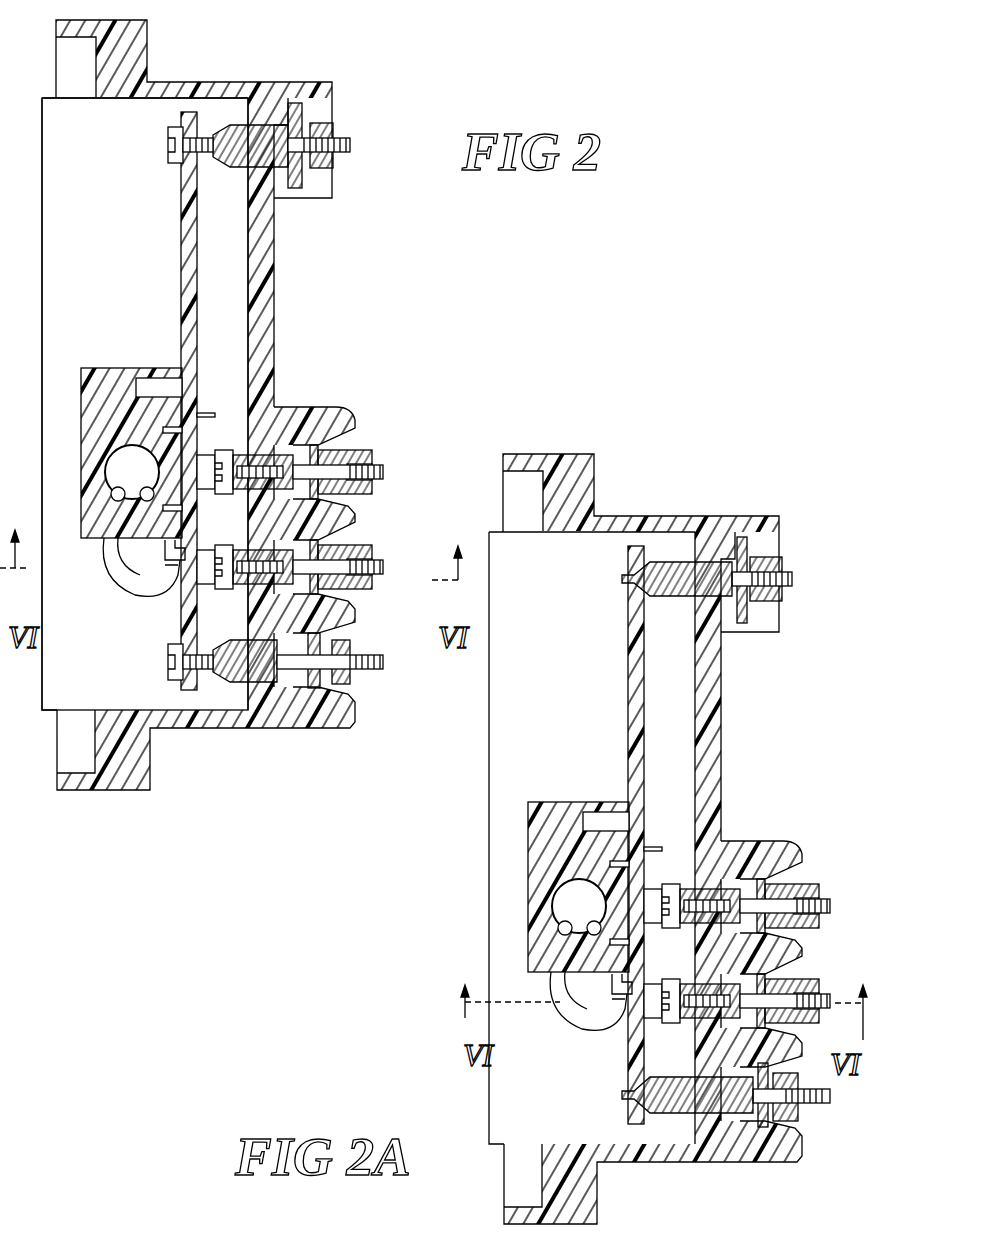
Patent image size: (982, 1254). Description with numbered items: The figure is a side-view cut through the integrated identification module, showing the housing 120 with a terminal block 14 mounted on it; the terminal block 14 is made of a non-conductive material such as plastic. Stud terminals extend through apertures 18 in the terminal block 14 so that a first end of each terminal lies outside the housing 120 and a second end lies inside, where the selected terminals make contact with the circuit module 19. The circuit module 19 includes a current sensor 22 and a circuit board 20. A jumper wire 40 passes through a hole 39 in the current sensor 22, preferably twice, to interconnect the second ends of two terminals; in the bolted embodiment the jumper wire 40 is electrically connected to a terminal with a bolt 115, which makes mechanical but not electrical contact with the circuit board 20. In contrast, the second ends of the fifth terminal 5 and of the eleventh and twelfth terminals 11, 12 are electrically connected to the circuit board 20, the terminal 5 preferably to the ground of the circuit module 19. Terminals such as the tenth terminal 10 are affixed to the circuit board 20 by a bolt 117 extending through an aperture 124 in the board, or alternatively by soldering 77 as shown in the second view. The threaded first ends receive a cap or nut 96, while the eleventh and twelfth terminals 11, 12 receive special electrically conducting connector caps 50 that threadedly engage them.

In FIG. 2, the housing 120 is at (267, 84).
In FIG. 2, the stud terminal 10 is at (350, 146).
In FIG. 2A, the stud terminal 10 is at (792, 579).
In FIG. 2, the bolt 117 is at (165, 159).
In FIG. 2, the nut 96 is at (335, 168).
In FIG. 2A, the nut 96 is at (800, 1118).
In FIG. 2, the aperture 124 is at (203, 162).
In FIG. 2, the circuit board 20 is at (178, 243).
In FIG. 2A, the circuit board 20 is at (622, 680).
In FIG. 2, the aperture 18 is at (288, 165).
In FIG. 2, the circuit module 19 is at (150, 328).
In FIG. 2, the current sensor 22 is at (118, 385).
In FIG. 2A, the current sensor 22 is at (565, 820).
In FIG. 2, the hole 39 is at (110, 470).
In FIG. 2A, the hole 39 is at (558, 905).
In FIG. 2, the terminal block 14 is at (345, 410).
In FIG. 2, the connector cap 50 is at (372, 453).
In FIG. 2A, the connector cap 50 is at (805, 890).
In FIG. 2, the stud terminal 11 is at (385, 470).
In FIG. 2A, the stud terminal 11 is at (832, 904).
In FIG. 2, the stud terminal 12 is at (385, 565).
In FIG. 2A, the stud terminal 12 is at (832, 999).
In FIG. 2, the stud terminal 5 is at (385, 662).
In FIG. 2A, the stud terminal 5 is at (835, 1097).
In FIG. 2, the jumper wire 40 is at (115, 575).
In FIG. 2A, the jumper wire 40 is at (592, 1015).
In FIG. 2, the bolt 115 is at (150, 598).
In FIG. 2A, the soldering 77 is at (625, 580).